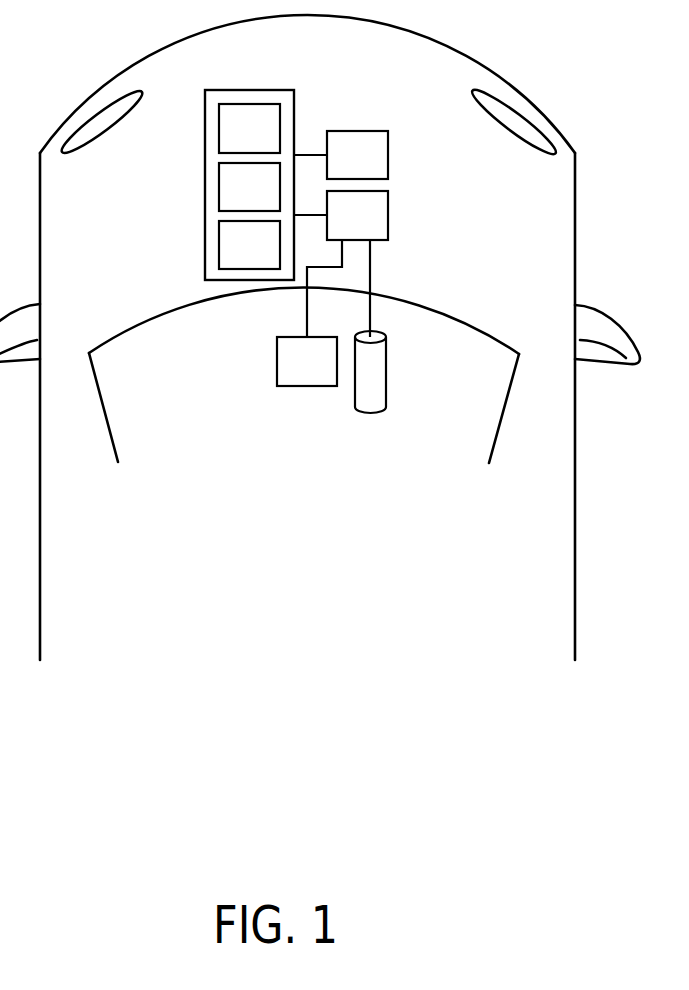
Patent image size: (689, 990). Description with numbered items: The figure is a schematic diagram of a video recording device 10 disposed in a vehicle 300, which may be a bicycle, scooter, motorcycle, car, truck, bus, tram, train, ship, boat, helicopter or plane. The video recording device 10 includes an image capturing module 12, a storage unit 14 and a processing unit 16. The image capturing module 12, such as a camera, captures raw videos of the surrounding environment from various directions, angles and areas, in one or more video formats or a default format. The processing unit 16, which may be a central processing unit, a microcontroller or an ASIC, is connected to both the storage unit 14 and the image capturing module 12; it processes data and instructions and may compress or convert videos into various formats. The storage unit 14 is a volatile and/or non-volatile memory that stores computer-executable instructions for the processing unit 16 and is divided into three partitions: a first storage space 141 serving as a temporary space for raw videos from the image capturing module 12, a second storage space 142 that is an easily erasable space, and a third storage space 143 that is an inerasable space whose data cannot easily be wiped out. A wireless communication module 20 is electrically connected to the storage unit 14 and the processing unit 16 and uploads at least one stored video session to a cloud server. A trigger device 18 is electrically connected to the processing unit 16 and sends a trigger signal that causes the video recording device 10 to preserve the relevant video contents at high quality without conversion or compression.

The vehicle 300 is at (492, 68).
The video recording device 10 is at (383, 264).
The storage unit 14 is at (285, 185).
The first storage space 141 is at (277, 143).
The second storage space 142 is at (277, 199).
The third storage space 143 is at (277, 258).
The wireless communication module 20 is at (377, 167).
The processing unit 16 is at (377, 228).
The trigger device 18 is at (325, 374).
The image capturing module 12 is at (388, 372).